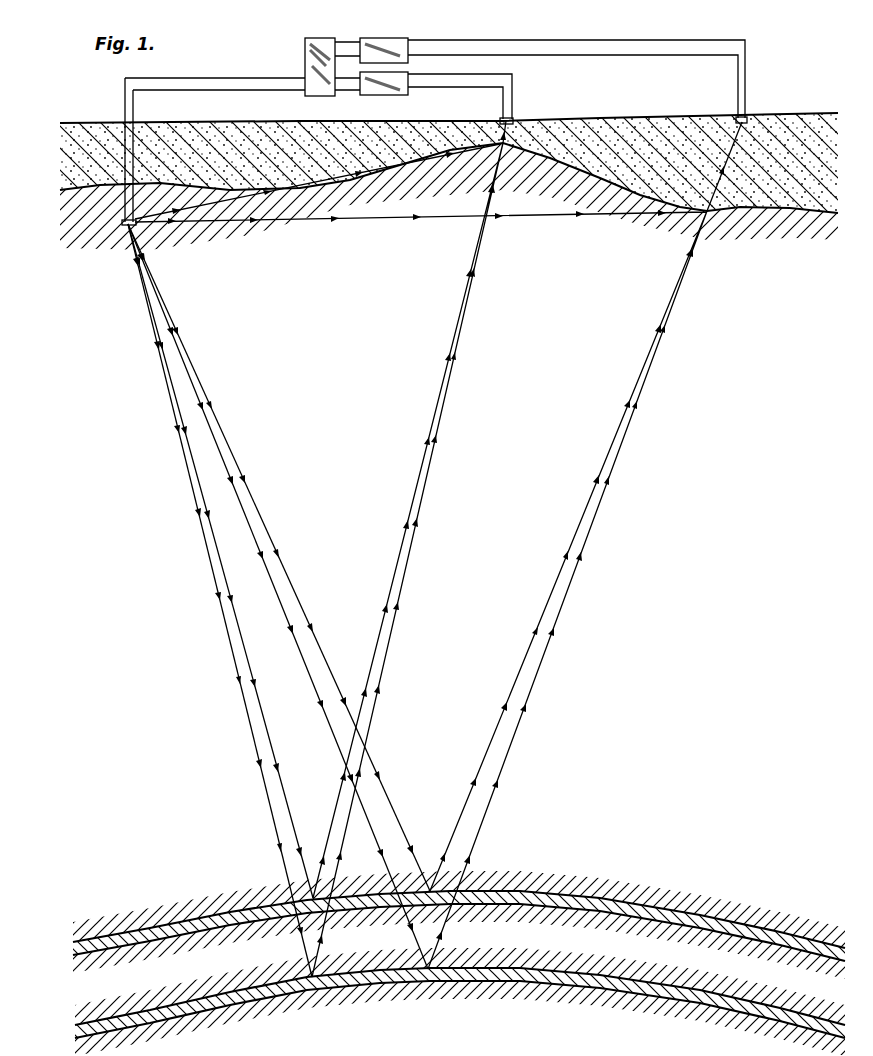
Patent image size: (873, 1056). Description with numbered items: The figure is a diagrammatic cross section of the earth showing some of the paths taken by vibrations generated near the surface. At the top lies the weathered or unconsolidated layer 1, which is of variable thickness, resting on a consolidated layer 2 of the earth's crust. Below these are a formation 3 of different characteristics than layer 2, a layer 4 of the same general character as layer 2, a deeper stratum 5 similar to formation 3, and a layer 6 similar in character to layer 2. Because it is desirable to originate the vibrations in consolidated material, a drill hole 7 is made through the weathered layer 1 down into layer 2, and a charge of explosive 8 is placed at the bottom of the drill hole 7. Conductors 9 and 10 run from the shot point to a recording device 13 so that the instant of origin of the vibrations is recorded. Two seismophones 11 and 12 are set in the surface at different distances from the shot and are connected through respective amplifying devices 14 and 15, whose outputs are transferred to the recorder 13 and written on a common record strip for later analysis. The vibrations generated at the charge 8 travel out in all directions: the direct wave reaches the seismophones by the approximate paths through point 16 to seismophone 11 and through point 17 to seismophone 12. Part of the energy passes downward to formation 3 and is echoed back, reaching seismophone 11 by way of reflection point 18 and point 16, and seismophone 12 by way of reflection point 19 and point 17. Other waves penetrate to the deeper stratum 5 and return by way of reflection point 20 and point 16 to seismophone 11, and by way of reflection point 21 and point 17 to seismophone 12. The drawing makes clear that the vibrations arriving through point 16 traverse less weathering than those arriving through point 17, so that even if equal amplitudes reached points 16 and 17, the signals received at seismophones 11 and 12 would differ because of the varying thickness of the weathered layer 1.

The weathered layer 1 is at (790, 118).
The consolidated layer 2 is at (449, 351).
The formation 3 is at (685, 905).
The layer 4 is at (543, 946).
The deeper lying strata 5 is at (518, 988).
The layer 6 is at (380, 998).
The drill hole 7 is at (147, 121).
The charge of explosive 8 is at (140, 232).
The conductor 9 is at (250, 78).
The conductor 10 is at (270, 91).
The seismophone 11 is at (515, 120).
The seismophone 12 is at (751, 118).
The recording device 13 is at (305, 48).
The amplifying device 14 is at (400, 94).
The amplifying device 15 is at (408, 40).
The point 16 is at (506, 150).
The point 17 is at (712, 216).
The reflection point 18 is at (285, 890).
The reflection point 19 is at (430, 886).
The reflection point 20 is at (322, 972).
The reflection point 21 is at (434, 964).